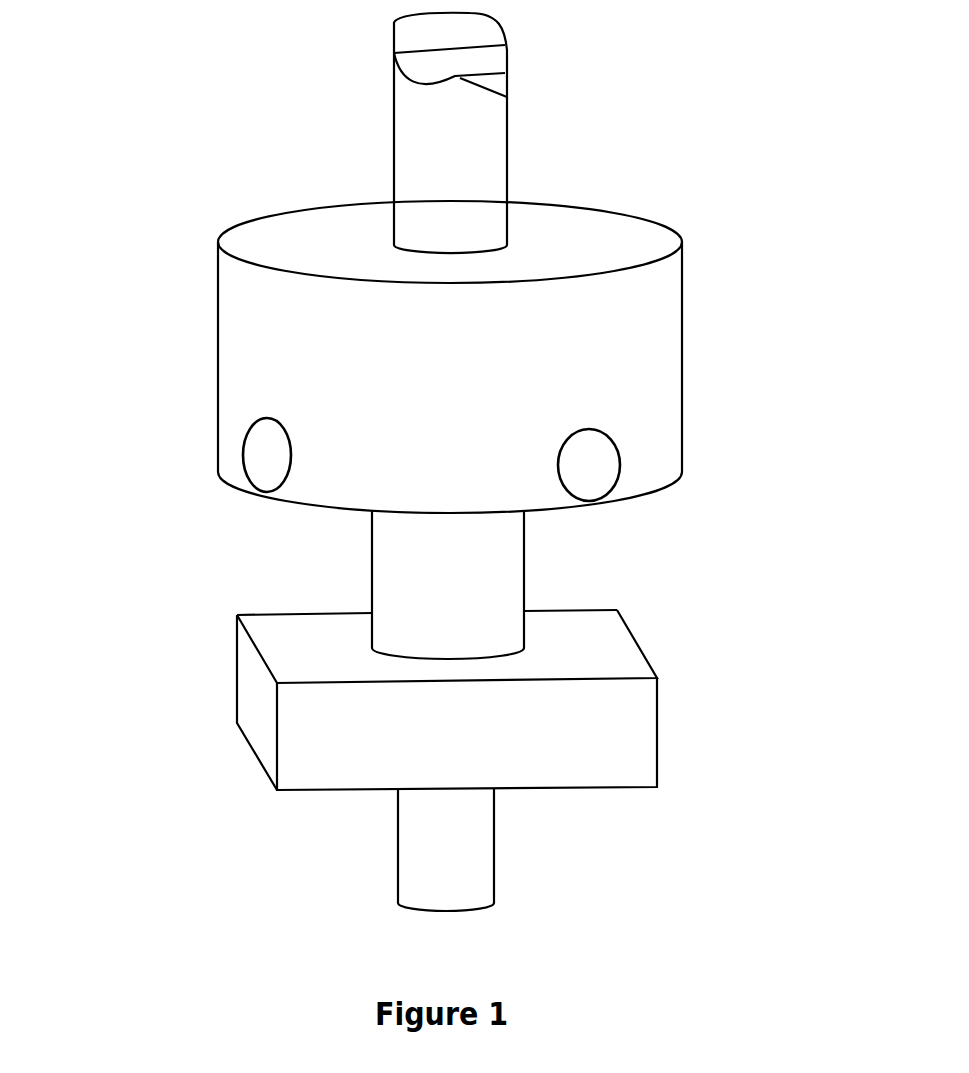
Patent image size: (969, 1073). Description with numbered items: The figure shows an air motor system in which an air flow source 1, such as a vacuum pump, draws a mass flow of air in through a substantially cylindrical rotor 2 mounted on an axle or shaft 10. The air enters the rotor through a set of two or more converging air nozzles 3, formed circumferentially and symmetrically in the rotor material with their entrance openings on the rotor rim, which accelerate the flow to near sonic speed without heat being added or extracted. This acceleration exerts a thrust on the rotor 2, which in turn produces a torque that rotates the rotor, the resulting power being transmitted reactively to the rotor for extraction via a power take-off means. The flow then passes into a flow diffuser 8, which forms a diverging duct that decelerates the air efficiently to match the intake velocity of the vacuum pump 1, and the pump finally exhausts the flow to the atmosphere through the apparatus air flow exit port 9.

The air flow source 1 is at (657, 732).
The cylindrical rotor 2 is at (682, 290).
The air nozzles 3 is at (243, 450).
The flow diffuser 8 is at (527, 568).
The air flow exit port 9 is at (497, 847).
The shaft 10 is at (508, 140).